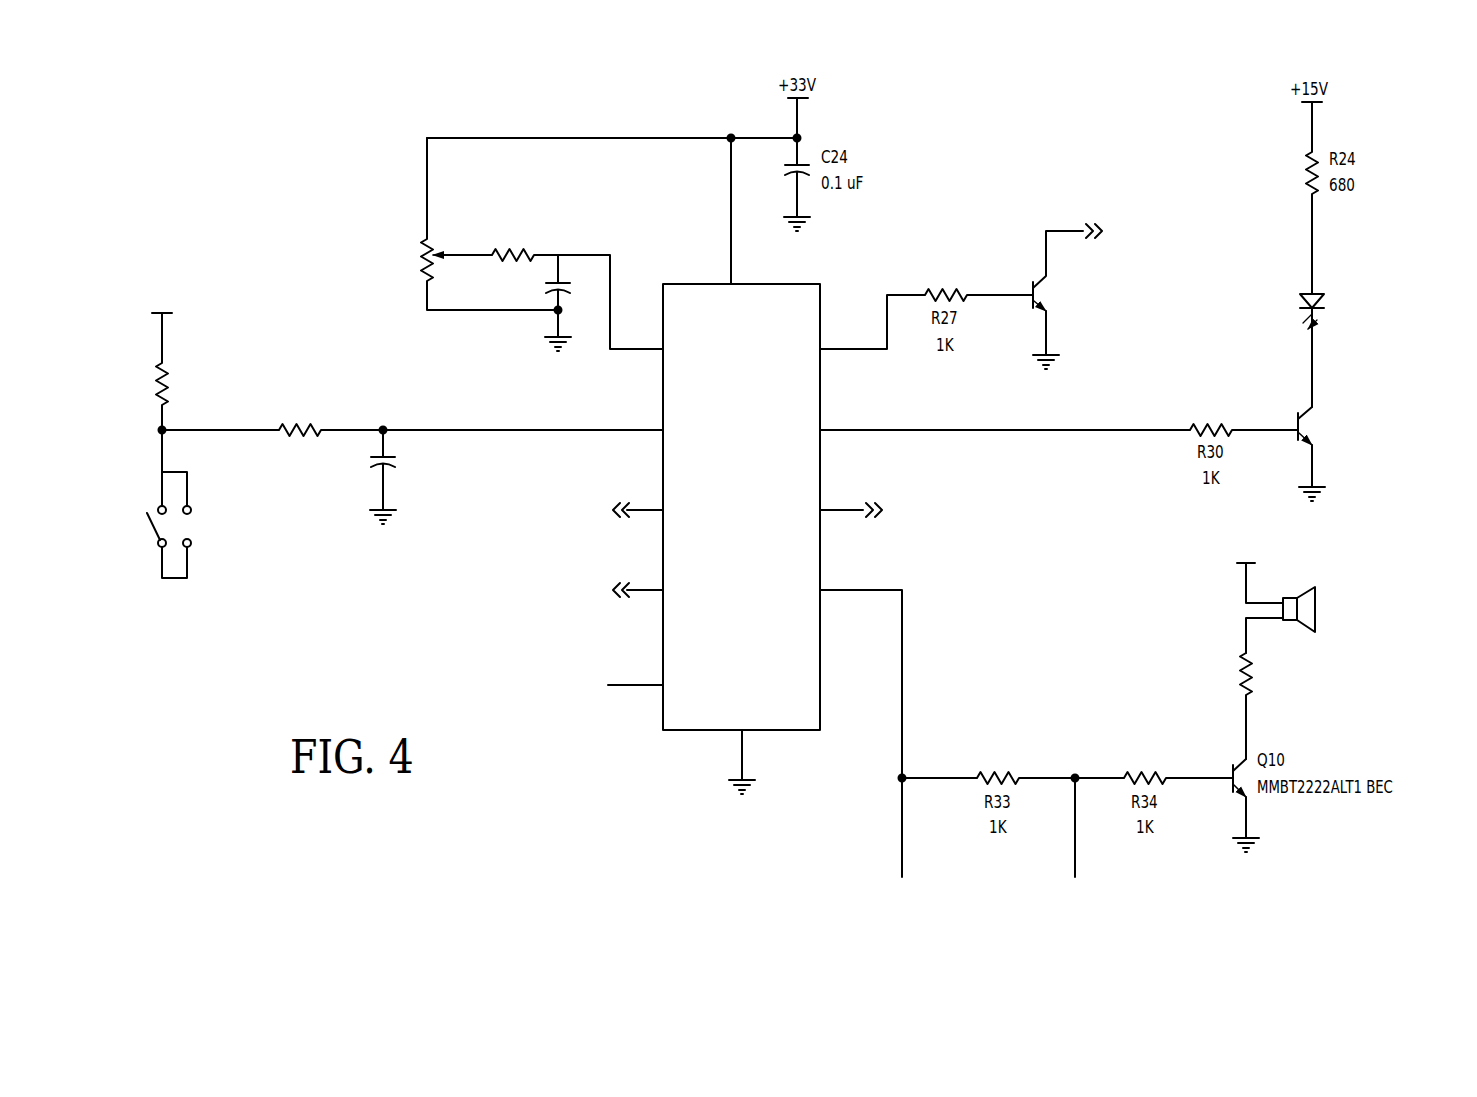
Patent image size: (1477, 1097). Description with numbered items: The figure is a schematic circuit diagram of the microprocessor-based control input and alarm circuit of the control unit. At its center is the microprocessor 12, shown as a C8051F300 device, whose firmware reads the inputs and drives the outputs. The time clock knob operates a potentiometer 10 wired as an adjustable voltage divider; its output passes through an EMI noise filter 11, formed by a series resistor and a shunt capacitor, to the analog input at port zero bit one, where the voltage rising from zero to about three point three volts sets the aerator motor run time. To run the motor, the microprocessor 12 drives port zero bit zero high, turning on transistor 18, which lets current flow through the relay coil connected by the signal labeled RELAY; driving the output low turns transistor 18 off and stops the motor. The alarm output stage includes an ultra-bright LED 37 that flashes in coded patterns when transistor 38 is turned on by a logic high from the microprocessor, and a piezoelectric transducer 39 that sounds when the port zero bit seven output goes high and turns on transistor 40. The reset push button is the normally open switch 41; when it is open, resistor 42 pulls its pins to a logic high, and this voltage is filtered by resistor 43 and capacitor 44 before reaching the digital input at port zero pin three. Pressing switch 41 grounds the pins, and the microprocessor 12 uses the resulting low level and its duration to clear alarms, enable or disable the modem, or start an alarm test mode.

The potentiometer 10 is at (428, 224).
The EMI noise filter 11 is at (551, 255).
The microprocessor 12 is at (723, 499).
The transistor 18 is at (1102, 263).
The ultra-bright LED 37 is at (1318, 311).
The transistor 38 is at (1335, 428).
The piezoelectric transducer 39 is at (1281, 596).
The transistor 40 is at (1242, 706).
The switch 41 is at (249, 543).
The resistor 42 is at (195, 354).
The resistor 43 is at (412, 443).
The capacitor 44 is at (411, 446).